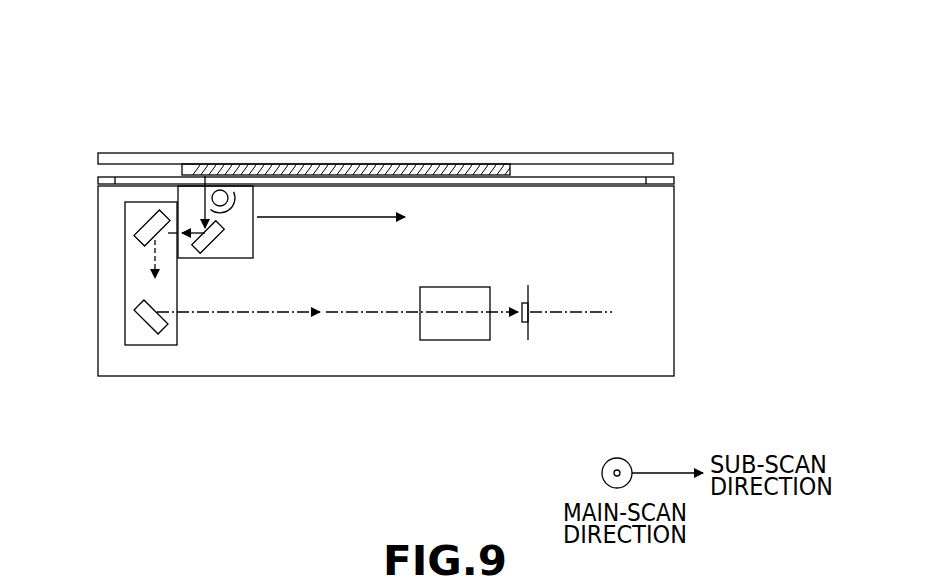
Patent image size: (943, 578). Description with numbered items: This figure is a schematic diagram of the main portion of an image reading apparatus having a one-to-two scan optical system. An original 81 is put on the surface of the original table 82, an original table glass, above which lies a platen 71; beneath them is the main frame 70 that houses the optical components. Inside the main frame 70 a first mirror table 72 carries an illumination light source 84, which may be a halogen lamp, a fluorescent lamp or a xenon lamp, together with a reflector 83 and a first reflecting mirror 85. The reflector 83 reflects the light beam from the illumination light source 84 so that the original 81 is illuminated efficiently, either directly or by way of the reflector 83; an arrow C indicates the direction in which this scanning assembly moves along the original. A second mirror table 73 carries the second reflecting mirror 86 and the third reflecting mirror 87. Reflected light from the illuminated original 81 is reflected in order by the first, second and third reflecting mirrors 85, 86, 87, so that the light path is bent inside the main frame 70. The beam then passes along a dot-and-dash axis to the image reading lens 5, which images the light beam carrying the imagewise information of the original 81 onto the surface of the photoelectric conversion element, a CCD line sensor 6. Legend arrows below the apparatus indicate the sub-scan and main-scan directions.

The main frame 70 is at (674, 210).
The platen 71 is at (636, 153).
The first mirror table 72 is at (193, 258).
The second mirror table 73 is at (125, 343).
The original 81 is at (305, 170).
The original table 82 is at (602, 184).
The reflector 83 is at (242, 205).
The illumination light source 84 is at (237, 200).
The first reflecting mirror 85 is at (212, 248).
The second reflecting mirror 86 is at (132, 223).
The third reflecting mirror 87 is at (132, 303).
The image reading lens 5 is at (463, 340).
The line sensor 6 is at (532, 340).
The scanning direction C is at (343, 220).